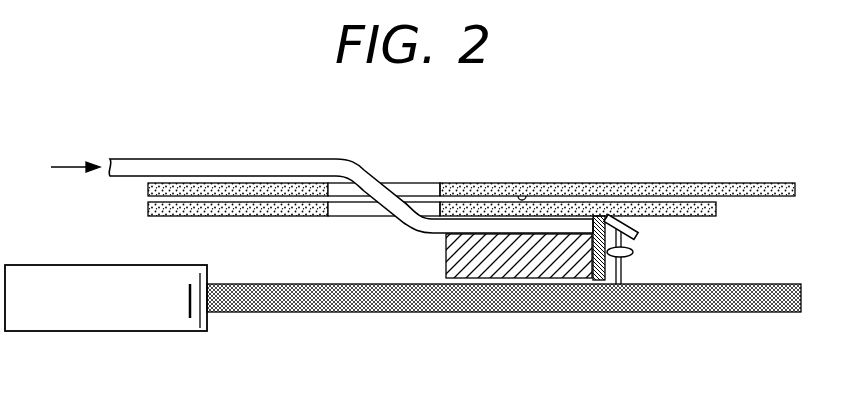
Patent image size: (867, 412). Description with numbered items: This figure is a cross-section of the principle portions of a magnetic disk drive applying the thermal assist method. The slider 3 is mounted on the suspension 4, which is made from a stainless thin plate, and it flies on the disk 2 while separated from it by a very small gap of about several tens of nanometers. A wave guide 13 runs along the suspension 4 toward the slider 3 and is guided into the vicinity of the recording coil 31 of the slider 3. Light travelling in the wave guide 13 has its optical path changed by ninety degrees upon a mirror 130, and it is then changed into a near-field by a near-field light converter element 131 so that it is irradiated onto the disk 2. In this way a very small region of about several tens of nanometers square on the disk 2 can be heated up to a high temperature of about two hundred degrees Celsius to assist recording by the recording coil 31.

The disk 2 is at (692, 312).
The slider 3 is at (485, 268).
The suspension 4 is at (578, 184).
The wave guide 13 is at (258, 160).
The recording coil 31 is at (595, 280).
The mirror 130 is at (633, 216).
The near-field light converter element 131 is at (634, 253).